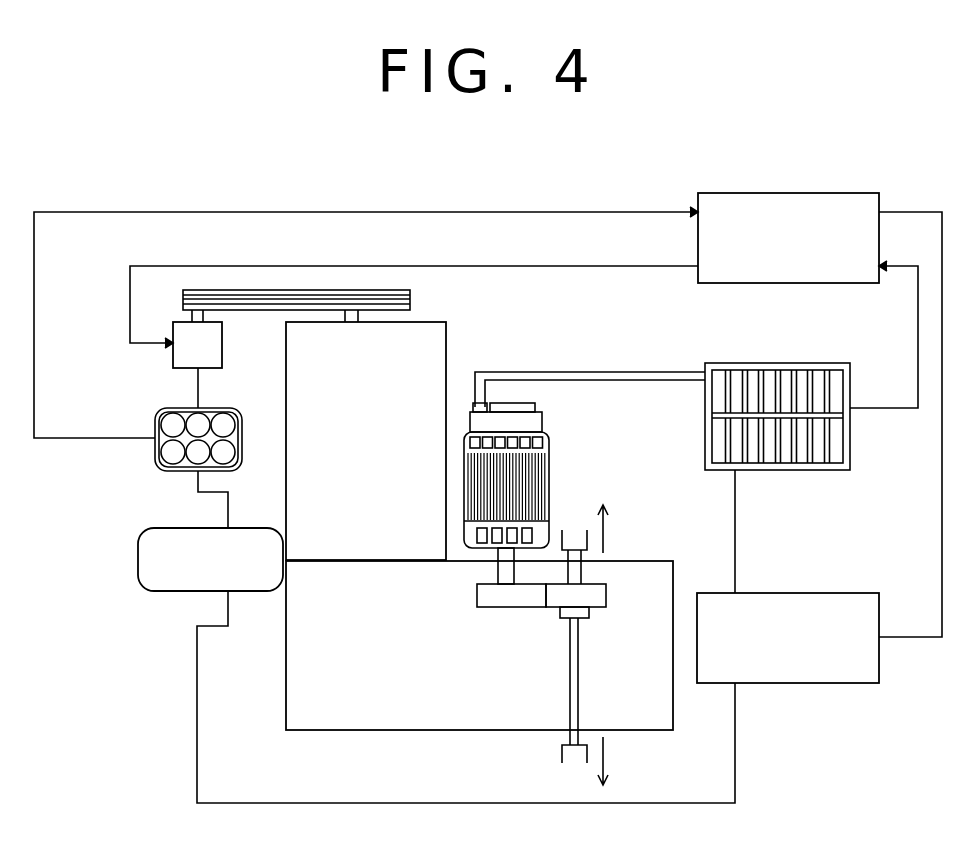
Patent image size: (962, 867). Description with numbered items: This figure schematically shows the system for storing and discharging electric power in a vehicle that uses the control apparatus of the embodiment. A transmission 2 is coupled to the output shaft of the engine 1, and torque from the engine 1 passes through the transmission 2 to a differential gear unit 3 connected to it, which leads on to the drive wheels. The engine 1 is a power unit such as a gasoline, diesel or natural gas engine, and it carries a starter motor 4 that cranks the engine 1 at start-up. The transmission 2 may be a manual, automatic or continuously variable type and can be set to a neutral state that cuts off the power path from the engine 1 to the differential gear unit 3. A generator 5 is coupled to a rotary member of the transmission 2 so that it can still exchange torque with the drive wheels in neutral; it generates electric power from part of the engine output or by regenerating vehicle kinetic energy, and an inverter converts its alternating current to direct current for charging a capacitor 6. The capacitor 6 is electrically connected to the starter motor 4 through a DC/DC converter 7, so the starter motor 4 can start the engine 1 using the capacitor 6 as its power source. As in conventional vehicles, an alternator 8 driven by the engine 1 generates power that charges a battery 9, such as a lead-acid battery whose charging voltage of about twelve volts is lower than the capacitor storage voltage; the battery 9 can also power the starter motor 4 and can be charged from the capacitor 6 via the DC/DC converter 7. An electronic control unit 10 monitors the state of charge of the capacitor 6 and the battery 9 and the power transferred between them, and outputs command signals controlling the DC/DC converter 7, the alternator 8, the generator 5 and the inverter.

The engine 1 is at (448, 342).
The transmission 2 is at (446, 733).
The differential gear unit 3 is at (606, 594).
The starter motor 4 is at (138, 562).
The generator 5 is at (553, 450).
The capacitor 6 is at (778, 362).
The DC/DC converter 7 is at (787, 684).
The alternator 8 is at (222, 346).
The battery 9 is at (150, 452).
The electronic control unit 10 is at (790, 192).